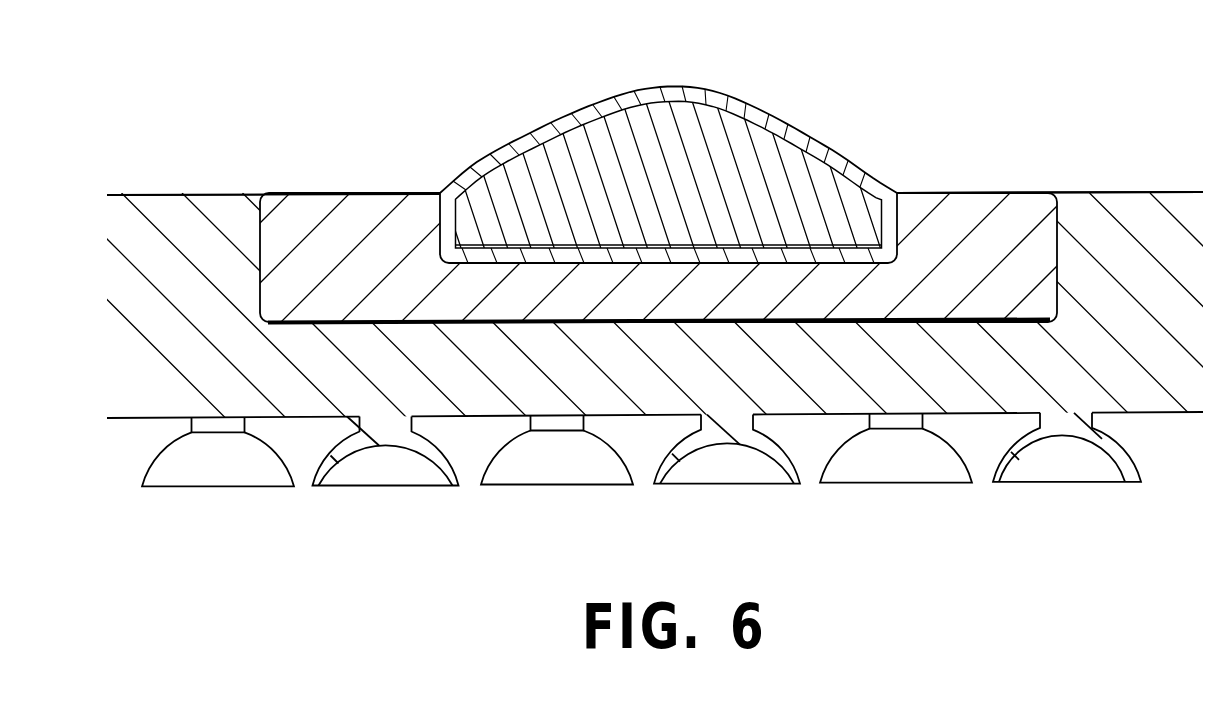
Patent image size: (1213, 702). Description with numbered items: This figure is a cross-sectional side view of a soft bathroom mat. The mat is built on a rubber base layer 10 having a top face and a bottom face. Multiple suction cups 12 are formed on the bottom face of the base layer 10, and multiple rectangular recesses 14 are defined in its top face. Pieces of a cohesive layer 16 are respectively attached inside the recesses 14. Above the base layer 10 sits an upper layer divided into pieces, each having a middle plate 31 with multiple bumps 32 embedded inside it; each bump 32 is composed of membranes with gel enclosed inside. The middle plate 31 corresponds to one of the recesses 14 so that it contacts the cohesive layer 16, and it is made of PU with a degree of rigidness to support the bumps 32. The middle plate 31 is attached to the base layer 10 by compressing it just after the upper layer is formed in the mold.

The base layer 10 is at (1157, 218).
The suction cups 12 is at (1120, 467).
The rectangular recesses 14 is at (1052, 253).
The cohesive layer 16 is at (382, 320).
The middle plate 31 is at (970, 208).
The bumps 32 is at (822, 116).